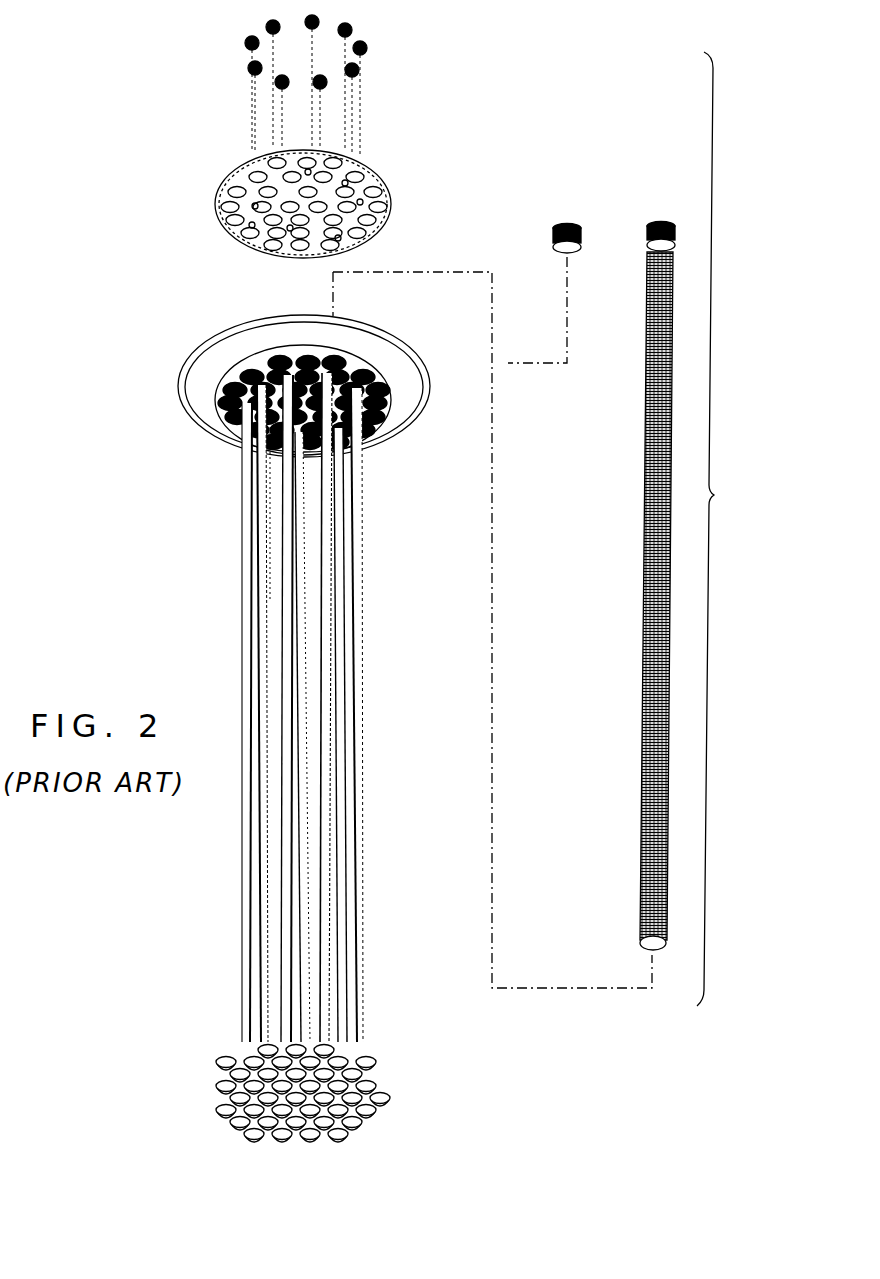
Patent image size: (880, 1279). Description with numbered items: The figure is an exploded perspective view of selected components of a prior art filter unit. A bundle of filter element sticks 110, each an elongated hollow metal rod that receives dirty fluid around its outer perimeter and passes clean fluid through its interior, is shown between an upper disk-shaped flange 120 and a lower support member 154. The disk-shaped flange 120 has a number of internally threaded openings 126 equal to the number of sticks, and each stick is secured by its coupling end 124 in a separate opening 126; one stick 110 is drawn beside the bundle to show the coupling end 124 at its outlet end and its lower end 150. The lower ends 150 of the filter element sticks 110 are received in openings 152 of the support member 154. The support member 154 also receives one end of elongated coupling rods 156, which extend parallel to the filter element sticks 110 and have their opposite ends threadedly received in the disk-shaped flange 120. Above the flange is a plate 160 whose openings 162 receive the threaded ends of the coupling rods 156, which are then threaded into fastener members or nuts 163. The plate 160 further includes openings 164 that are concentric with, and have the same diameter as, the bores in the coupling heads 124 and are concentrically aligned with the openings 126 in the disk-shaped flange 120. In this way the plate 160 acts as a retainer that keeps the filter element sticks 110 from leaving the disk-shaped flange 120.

The filter element stick 110 is at (645, 553).
The disk-shaped flange 120 is at (398, 434).
The coupling end 124 is at (645, 253).
The openings 126 is at (243, 372).
The lower end 150 is at (640, 941).
The openings 152 is at (380, 1108).
The support member 154 is at (383, 1078).
The coupling rod 156 is at (243, 573).
The plate 160 is at (390, 196).
The openings 162 is at (268, 178).
The nuts 163 is at (360, 22).
The openings 164 is at (232, 203).